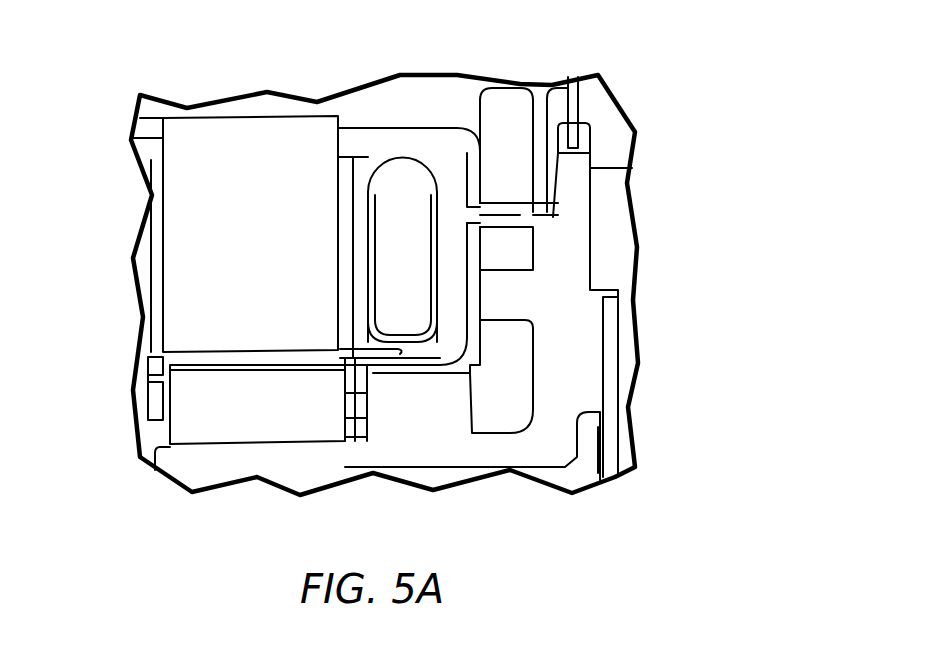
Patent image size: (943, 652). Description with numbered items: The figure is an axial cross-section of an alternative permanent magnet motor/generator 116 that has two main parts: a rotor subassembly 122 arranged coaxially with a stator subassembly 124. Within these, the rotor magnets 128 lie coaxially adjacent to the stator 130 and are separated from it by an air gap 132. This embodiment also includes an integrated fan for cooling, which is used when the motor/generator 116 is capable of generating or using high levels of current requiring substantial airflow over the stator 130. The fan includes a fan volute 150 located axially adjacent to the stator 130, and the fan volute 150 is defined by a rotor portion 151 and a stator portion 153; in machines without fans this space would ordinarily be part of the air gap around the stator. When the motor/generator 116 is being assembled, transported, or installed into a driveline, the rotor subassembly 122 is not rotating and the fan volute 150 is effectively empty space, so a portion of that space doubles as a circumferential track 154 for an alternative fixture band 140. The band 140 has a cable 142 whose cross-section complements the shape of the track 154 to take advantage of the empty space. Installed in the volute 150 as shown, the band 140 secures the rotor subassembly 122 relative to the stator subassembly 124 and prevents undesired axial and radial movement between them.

The permanent magnet motor/generator 116 is at (726, 95).
The rotor subassembly 122 is at (548, 430).
The stator subassembly 124 is at (380, 120).
The rotor magnets 128 is at (213, 415).
The stator 130 is at (227, 270).
The air gap 132 is at (227, 370).
The fixture band 140 is at (503, 200).
The cable 142 is at (515, 213).
The fan volute 150 is at (490, 108).
The rotor portion 151 is at (541, 257).
The stator portion 153 is at (518, 80).
The track 154 is at (535, 228).